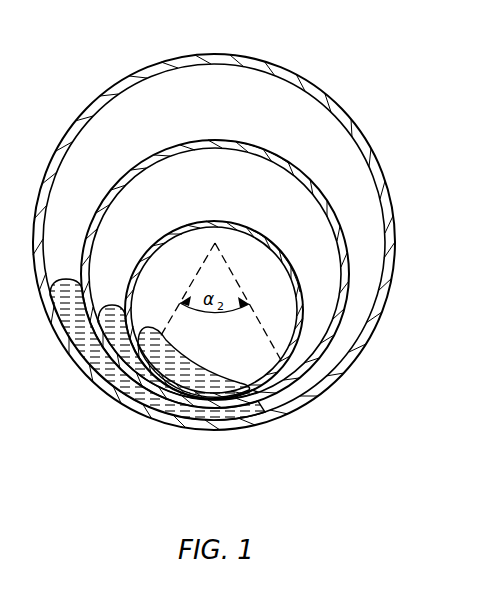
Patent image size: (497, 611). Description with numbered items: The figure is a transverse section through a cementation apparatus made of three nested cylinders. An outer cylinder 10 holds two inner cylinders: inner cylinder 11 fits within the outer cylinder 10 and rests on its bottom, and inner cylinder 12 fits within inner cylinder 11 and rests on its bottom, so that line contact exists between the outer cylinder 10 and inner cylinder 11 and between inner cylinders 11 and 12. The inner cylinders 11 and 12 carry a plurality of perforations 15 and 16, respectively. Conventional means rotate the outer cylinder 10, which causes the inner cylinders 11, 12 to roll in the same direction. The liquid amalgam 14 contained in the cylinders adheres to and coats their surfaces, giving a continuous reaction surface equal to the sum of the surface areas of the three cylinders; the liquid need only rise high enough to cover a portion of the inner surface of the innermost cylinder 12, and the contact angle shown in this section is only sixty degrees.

The outer cylinder 10 is at (369, 143).
The inner cylinder 11 is at (331, 207).
The inner cylinder 12 is at (298, 280).
The liquid amalgam 14 is at (183, 377).
The perforations 15 is at (291, 121).
The perforations 16 is at (286, 244).